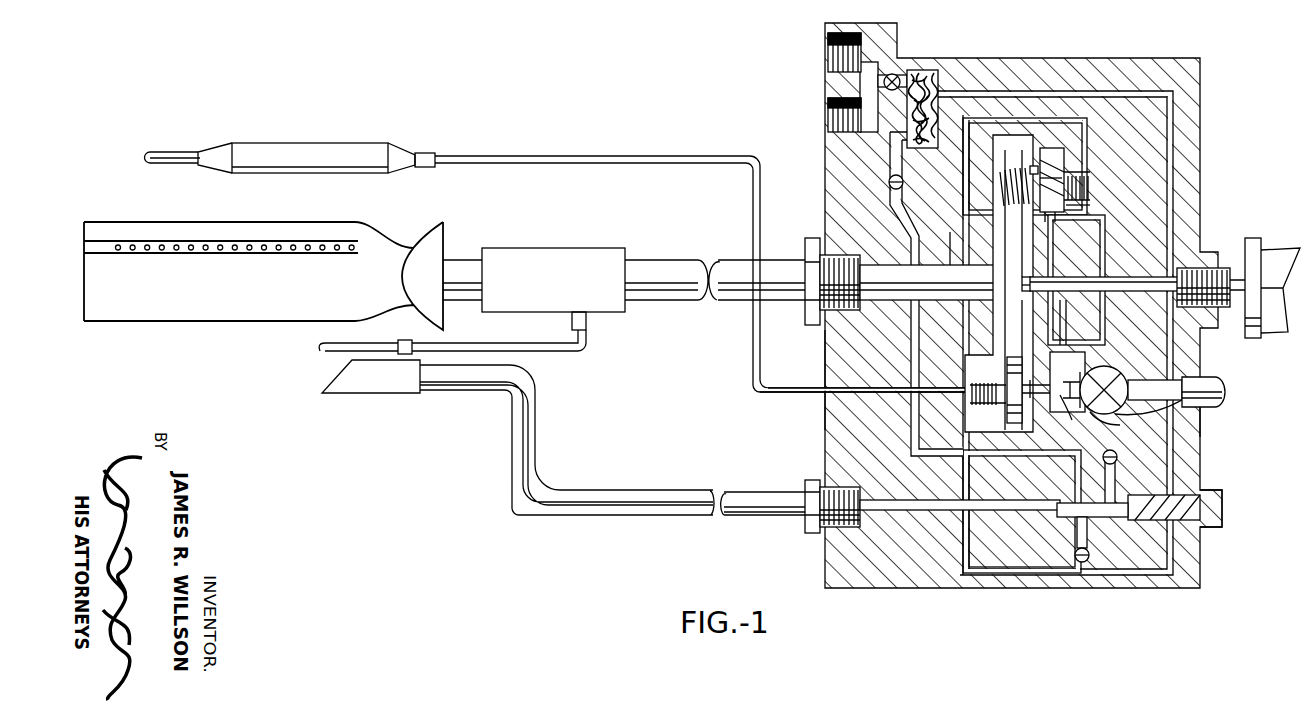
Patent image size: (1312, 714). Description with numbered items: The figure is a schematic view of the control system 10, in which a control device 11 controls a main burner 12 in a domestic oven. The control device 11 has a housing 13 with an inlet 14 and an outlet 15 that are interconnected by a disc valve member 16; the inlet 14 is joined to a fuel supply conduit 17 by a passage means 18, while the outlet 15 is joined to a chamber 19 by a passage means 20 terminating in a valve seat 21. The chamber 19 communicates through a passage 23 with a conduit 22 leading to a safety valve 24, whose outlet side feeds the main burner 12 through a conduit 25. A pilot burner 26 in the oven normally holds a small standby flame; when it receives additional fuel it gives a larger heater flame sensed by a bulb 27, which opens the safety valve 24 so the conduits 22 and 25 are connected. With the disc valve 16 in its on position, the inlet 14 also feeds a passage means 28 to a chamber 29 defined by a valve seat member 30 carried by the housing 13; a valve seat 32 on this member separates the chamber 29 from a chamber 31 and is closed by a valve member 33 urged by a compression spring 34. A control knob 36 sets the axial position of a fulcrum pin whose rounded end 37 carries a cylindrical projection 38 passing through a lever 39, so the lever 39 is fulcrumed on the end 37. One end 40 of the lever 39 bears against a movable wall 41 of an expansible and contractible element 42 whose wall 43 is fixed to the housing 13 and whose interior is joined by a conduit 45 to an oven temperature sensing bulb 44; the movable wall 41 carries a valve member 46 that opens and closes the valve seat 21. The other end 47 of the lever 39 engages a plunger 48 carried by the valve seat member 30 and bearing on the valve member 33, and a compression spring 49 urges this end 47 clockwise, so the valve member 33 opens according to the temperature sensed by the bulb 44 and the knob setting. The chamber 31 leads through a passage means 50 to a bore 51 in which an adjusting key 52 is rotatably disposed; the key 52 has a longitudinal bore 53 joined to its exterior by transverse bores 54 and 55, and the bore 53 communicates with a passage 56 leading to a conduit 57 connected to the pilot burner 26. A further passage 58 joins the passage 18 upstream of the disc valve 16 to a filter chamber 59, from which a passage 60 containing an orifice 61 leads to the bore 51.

The control system 10 is at (620, 84).
The control device 11 is at (1040, 47).
The main burner means 12 is at (216, 325).
The housing means 13 is at (828, 349).
The inlet 14 is at (1132, 410).
The outlet 15 is at (1082, 366).
The disc valve member 16 is at (1118, 366).
The fuel supply conduit 17 is at (1210, 386).
The passage means 18 is at (1198, 426).
The chamber 19 is at (1062, 330).
The passage means 20 is at (1107, 428).
The valve seat 21 is at (1064, 362).
The conduit 22 is at (650, 264).
The passage 23 is at (893, 303).
The safety valve 24 is at (536, 248).
The conduit 25 is at (456, 257).
The pilot burner 26 is at (370, 384).
The bulb 27 is at (320, 349).
The passage means 28 is at (1106, 243).
The chamber 29 is at (1056, 220).
The valve seat member 30 is at (1042, 194).
The chamber 31 is at (1088, 205).
The valve seat 32 is at (1060, 169).
The valve member 33 is at (1090, 188).
The compression spring 34 is at (1088, 176).
The control knob 36 is at (1276, 249).
The rounded end 37 is at (1024, 279).
The cylindrical projection 38 is at (1024, 286).
The lever 39 is at (1042, 272).
The one end of lever 40 is at (999, 283).
The movable wall 41 is at (1022, 402).
The expansible and contractible element 42 is at (1006, 362).
The wall 43 is at (987, 408).
The oven temperature sensing bulb 44 is at (291, 150).
The conduit 45 is at (572, 160).
The valve member 46 is at (1070, 420).
The other end of lever 47 is at (1025, 166).
The plunger 48 is at (1032, 168).
The compression spring 49 is at (1001, 186).
The passage means 50 is at (960, 224).
The bore 51 is at (1081, 511).
The adjusting key 52 is at (1222, 504).
The longitudinal bore 53 is at (1068, 520).
The transverse bore 54 is at (1088, 530).
The transverse bore 55 is at (1078, 496).
The passage 56 is at (924, 515).
The conduit 57 is at (654, 492).
The passage 58 is at (1184, 114).
The filter chamber 59 is at (925, 73).
The passage 60 is at (913, 345).
The orifice 61 is at (903, 185).